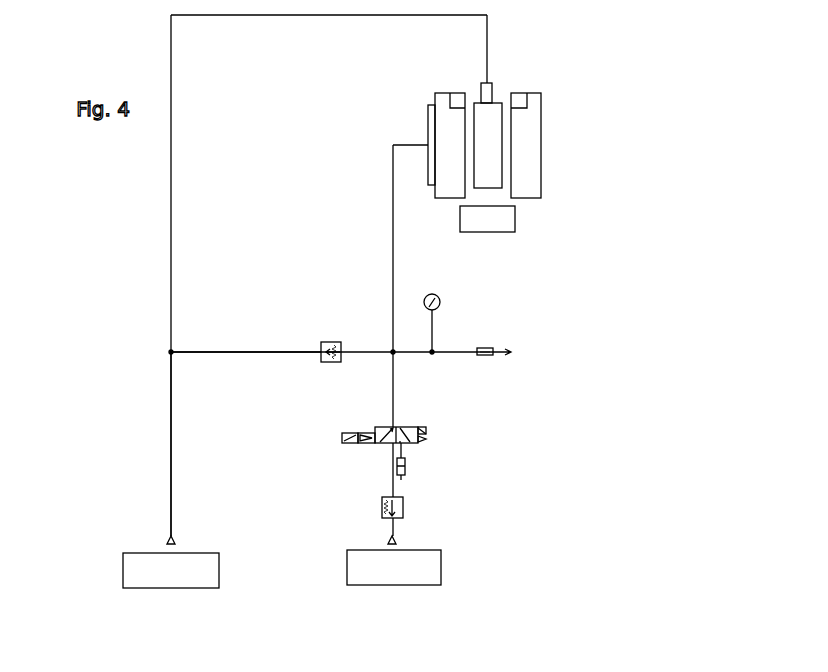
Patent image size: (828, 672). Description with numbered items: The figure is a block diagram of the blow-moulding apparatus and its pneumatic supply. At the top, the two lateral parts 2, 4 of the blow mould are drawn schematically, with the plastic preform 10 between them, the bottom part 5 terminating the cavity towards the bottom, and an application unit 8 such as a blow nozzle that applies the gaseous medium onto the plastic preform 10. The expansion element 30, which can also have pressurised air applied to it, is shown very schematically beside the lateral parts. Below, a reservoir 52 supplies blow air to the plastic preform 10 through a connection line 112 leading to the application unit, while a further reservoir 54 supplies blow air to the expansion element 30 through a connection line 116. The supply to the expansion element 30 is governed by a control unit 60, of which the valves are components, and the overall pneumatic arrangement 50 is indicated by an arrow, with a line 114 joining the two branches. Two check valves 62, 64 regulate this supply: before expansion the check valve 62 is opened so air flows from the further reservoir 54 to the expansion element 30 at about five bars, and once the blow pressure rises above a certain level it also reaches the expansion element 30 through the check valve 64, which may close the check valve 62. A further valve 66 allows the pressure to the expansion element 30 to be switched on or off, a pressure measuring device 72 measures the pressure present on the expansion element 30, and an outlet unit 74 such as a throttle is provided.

The lateral part 2 is at (530, 133).
The lateral part 4 is at (445, 127).
The bottom part 5 is at (503, 218).
The application unit 8 is at (489, 92).
The plastic preform 10 is at (493, 167).
The expansion element 30 is at (430, 170).
The pneumatic control arrangement 50 is at (597, 345).
The reservoir 52 is at (171, 570).
The further reservoir 54 is at (394, 567).
The control unit 60 is at (355, 318).
The check valve 62 is at (398, 512).
The check valve 64 is at (327, 345).
The further valve 66 is at (417, 442).
The pressure measuring device 72 is at (439, 302).
The outlet unit 74 is at (488, 354).
The connection line 112 is at (171, 395).
The connecting line 114 is at (257, 353).
The connection line 116 is at (393, 243).